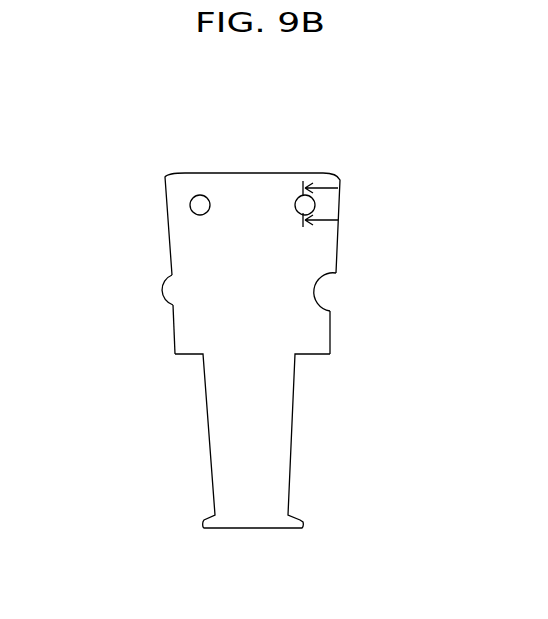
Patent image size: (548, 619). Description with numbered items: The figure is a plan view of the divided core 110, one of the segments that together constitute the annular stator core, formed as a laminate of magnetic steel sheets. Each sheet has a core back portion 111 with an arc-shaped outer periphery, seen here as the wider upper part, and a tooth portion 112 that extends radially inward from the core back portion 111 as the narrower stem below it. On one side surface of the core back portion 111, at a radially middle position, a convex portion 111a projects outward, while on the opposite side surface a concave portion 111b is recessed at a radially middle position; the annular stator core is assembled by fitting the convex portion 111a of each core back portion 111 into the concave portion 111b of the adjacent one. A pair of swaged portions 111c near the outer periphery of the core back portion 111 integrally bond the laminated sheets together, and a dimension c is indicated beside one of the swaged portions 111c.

The divided core 110 is at (142, 152).
The core back portion 111 is at (213, 247).
The convex portion 111a is at (173, 308).
The concave portion 111b is at (327, 291).
The swaged portion 111c is at (200, 195).
The tooth portion 112 is at (257, 476).
The dimension c is at (330, 204).